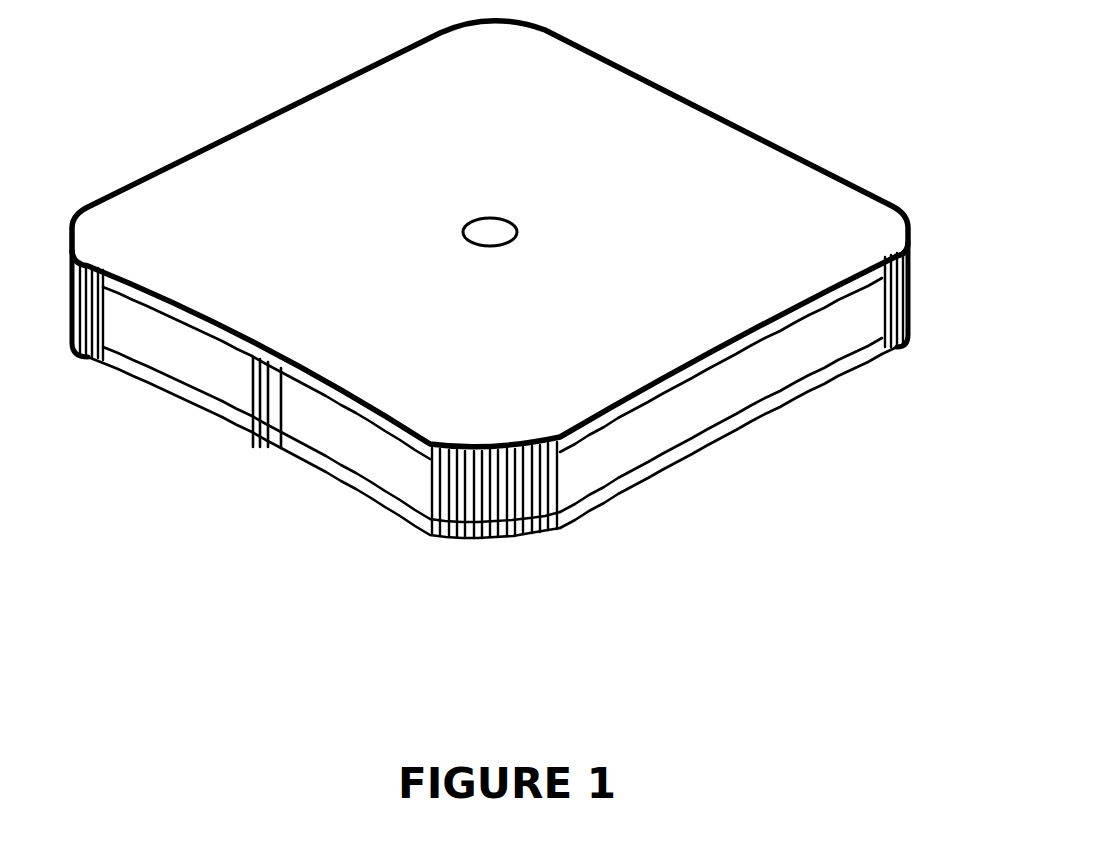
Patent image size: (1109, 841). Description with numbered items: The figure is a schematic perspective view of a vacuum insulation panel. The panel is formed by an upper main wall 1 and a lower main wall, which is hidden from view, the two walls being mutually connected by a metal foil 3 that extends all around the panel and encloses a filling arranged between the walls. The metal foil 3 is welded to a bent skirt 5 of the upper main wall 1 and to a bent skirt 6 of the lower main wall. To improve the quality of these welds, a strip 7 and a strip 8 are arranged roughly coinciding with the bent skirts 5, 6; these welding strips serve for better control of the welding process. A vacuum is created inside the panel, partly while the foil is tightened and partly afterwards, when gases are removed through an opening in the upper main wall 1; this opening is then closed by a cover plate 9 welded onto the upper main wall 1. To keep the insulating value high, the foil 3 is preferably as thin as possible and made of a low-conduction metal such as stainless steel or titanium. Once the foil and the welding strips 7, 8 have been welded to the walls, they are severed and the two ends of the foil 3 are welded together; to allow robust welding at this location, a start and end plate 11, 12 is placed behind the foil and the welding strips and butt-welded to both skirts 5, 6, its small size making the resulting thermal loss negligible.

The upper main wall 1 is at (605, 110).
The metal foil 3 is at (723, 400).
The bent skirt 5 is at (222, 344).
The bent skirt 6 is at (381, 502).
The strip 7 is at (633, 406).
The strip 8 is at (580, 506).
The cover plate 9 is at (486, 236).
The start and end plate 11 is at (288, 445).
The start and end plate 12 is at (247, 437).